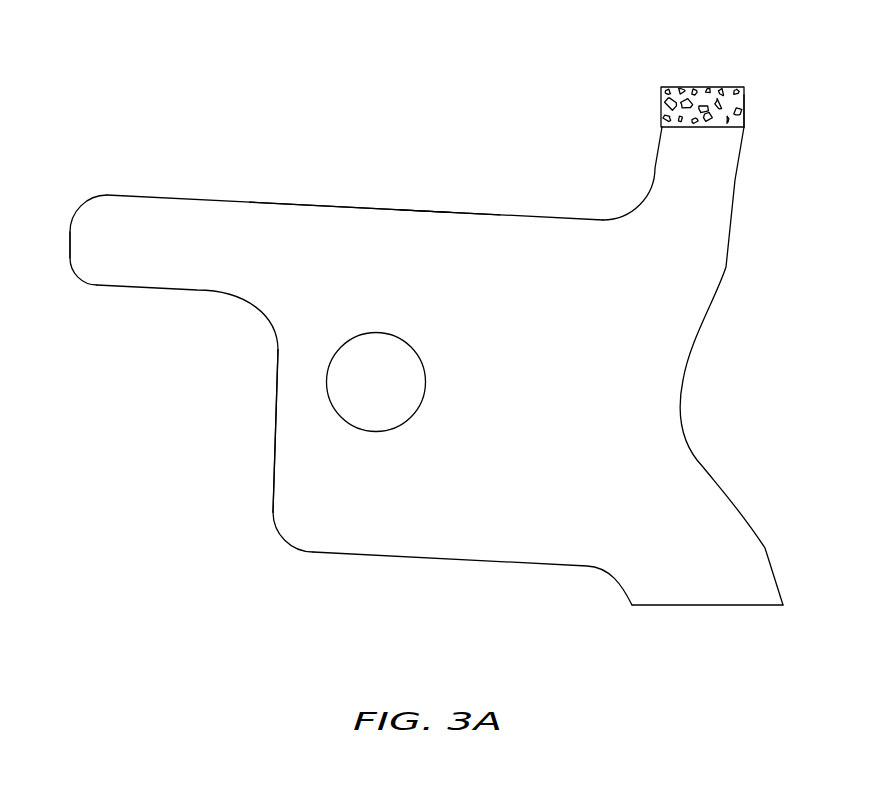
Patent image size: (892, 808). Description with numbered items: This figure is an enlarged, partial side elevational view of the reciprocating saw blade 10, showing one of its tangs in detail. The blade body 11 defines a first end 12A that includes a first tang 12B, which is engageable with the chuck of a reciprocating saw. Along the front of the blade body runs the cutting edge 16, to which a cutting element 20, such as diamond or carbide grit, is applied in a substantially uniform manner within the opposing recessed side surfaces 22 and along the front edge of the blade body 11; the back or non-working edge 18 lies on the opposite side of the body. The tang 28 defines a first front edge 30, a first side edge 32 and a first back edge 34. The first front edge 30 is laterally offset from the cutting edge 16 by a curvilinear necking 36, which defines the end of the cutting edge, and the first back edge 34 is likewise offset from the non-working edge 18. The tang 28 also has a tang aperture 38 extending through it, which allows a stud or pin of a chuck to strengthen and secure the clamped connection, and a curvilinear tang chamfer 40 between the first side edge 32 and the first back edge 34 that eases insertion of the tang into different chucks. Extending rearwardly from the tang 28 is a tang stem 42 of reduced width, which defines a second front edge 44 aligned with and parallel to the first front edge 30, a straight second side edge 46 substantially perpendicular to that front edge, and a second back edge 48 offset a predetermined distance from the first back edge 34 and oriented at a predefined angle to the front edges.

The reciprocating saw blade 10 is at (444, 172).
The blade body 11 is at (708, 565).
The first end 12A is at (663, 72).
The first tang 12B is at (134, 424).
The cutting edge 16 is at (709, 61).
The back edge 18 is at (708, 606).
The cutting element 20 is at (737, 89).
The recessed side surfaces 22 is at (766, 111).
The tang 28 is at (341, 190).
The first front edge 30 is at (545, 218).
The first side edge 32 is at (275, 425).
The first back edge 34 is at (453, 560).
The necking 36 is at (652, 189).
The tang aperture 38 is at (425, 381).
The tang chamfer 40 is at (286, 539).
The tang stem 42 is at (172, 259).
The second front edge 44 is at (192, 194).
The second side edge 46 is at (70, 243).
The second back edge 48 is at (157, 288).